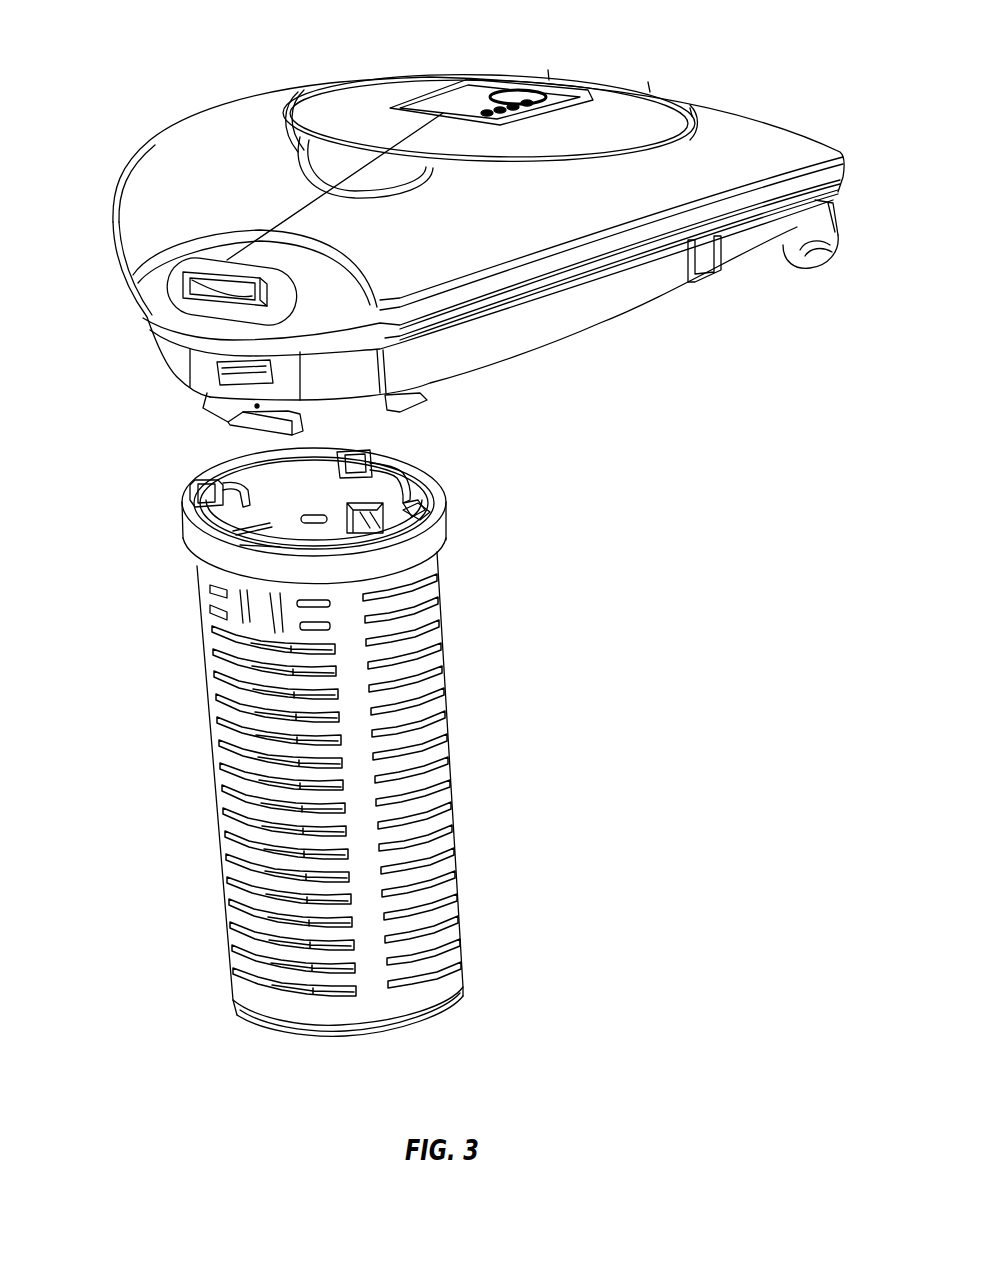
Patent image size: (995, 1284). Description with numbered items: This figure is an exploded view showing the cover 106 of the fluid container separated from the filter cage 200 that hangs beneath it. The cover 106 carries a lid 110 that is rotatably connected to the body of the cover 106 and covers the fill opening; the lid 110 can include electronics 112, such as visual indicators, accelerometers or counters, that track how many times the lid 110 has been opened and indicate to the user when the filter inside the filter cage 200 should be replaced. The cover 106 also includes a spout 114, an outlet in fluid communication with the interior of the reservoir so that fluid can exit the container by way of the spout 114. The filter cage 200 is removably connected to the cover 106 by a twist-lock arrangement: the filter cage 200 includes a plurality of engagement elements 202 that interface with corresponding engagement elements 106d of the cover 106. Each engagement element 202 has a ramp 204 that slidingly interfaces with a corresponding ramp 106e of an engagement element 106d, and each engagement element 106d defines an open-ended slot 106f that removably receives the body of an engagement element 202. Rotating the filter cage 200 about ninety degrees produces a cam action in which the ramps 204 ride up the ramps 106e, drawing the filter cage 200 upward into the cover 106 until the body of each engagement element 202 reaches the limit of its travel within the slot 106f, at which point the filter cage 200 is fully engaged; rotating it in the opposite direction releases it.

The cover 106 is at (217, 153).
The engagement element 106d is at (413, 397).
The ramp 106e is at (213, 415).
The open-ended slot 106f is at (253, 407).
The lid 110 is at (350, 117).
The electronics 112 is at (472, 108).
The spout 114 is at (213, 247).
The filter cage 200 is at (472, 708).
The engagement element 202 is at (205, 490).
The ramp 204 is at (395, 492).